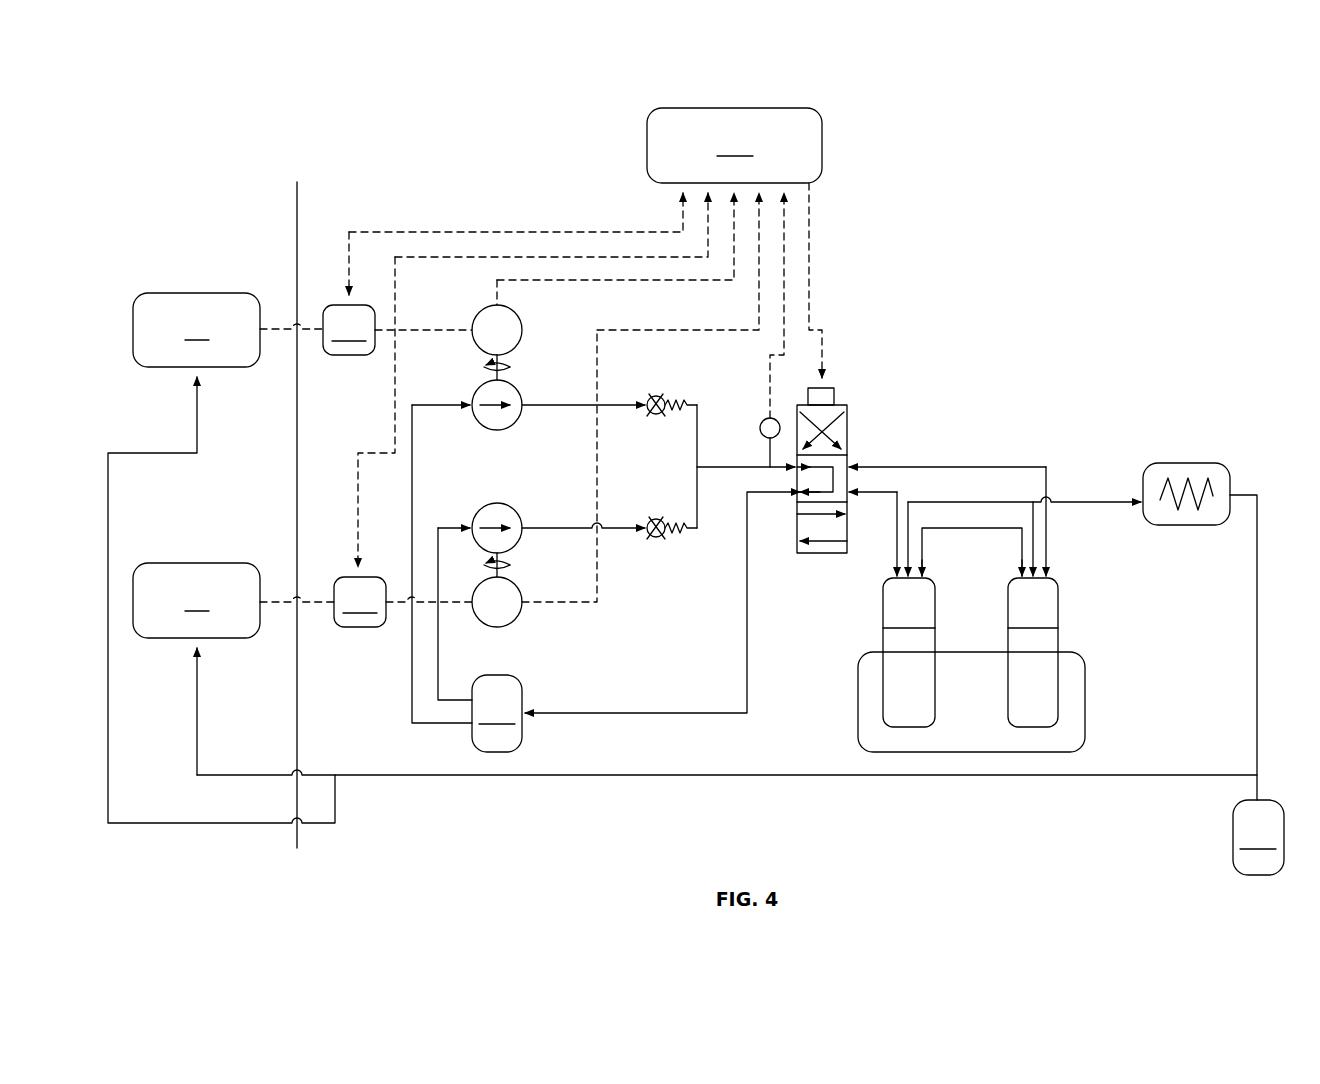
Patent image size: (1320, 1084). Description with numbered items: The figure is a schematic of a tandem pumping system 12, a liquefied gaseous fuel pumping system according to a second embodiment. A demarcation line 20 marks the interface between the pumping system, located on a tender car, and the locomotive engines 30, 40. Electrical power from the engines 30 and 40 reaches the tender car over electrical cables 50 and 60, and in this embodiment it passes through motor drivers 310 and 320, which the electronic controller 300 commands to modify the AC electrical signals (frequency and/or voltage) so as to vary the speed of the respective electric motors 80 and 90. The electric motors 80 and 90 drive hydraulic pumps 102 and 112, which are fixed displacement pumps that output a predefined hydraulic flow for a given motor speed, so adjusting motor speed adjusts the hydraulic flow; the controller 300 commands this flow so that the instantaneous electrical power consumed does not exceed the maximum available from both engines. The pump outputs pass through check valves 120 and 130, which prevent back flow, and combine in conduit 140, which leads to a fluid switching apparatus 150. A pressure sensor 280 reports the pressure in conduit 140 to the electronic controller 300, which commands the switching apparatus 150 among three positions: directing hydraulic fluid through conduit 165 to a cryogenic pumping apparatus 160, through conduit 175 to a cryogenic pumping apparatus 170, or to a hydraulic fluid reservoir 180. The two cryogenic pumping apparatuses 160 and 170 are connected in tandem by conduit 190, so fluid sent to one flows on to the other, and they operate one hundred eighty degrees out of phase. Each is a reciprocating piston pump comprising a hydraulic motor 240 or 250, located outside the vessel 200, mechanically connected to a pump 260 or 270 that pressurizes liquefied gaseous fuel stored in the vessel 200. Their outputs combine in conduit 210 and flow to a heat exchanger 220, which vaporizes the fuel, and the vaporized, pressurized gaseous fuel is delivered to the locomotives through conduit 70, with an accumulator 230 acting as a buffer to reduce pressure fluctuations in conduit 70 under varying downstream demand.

The tandem pumping system 12 is at (1122, 210).
The demarcation line 20 is at (298, 200).
The locomotive engine 30 is at (196, 330).
The locomotive engine 40 is at (196, 600).
The electrical cable 50 is at (270, 332).
The electrical cable 60 is at (270, 604).
The conduit 70 is at (363, 778).
The electric motor 80 is at (478, 322).
The electric motor 90 is at (477, 598).
The hydraulic pump 102 is at (476, 416).
The hydraulic pump 112 is at (478, 516).
The check valve 120 is at (653, 400).
The check valve 130 is at (657, 538).
The conduit 140 is at (720, 470).
The fluid switching apparatus 150 is at (850, 410).
The cryogenic pumping apparatus 160 is at (886, 586).
The conduit 165 is at (875, 495).
The cryogenic pumping apparatus 170 is at (1062, 590).
The conduit 175 is at (948, 467).
The hydraulic fluid reservoir 180 is at (636, 622).
The conduit 190 is at (968, 531).
The vessel 200 is at (857, 706).
The conduit 210 is at (1092, 502).
The heat exchanger 220 is at (1182, 462).
The accumulator 230 is at (1258, 837).
The hydraulic motor 240 is at (935, 627).
The hydraulic motor 250 is at (1009, 606).
The pump 260 is at (935, 715).
The pump 270 is at (1008, 700).
The pressure sensor 280 is at (760, 428).
The electronic controller 300 is at (585, 263).
The motor driver 310 is at (397, 293).
The motor driver 320 is at (403, 442).